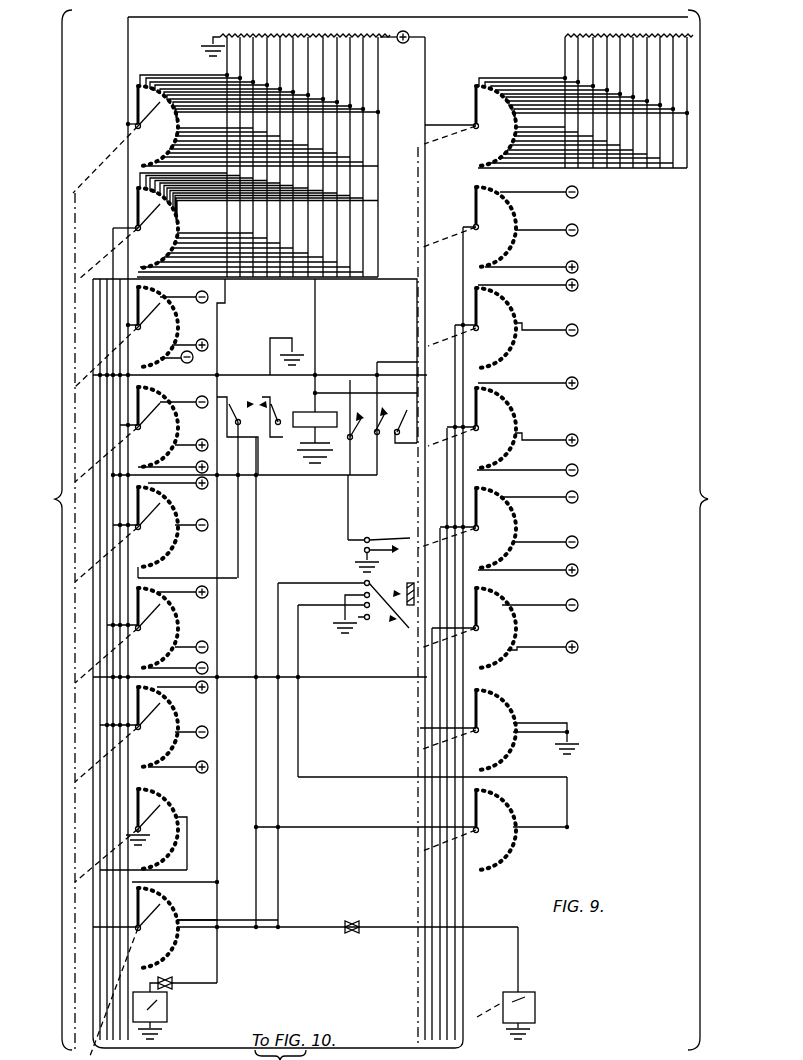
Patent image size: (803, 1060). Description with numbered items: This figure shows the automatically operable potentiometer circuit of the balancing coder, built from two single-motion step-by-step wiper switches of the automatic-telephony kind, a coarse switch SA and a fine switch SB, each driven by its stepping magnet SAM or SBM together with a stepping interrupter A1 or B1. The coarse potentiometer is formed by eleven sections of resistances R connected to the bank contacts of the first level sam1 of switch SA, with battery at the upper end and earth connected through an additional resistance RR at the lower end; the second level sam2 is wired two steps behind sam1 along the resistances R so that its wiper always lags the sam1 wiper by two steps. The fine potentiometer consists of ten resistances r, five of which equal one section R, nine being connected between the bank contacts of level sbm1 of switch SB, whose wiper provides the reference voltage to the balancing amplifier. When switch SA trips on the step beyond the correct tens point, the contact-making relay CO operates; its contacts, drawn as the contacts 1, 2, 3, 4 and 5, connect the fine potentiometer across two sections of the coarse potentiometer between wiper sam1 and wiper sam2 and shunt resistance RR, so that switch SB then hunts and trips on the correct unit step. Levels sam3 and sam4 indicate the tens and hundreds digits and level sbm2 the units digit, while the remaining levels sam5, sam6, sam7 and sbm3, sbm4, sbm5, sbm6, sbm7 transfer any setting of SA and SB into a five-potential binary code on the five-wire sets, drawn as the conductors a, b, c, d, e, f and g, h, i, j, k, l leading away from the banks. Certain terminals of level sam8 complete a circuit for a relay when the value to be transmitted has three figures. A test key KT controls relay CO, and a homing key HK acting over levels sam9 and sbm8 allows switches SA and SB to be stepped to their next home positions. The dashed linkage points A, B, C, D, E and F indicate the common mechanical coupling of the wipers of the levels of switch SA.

The first level wiper and bank of switch SA sam1 is at (137, 114).
The second level wiper and bank of switch SA sam2 is at (148, 206).
The third level of switch SA sam3 is at (141, 337).
The fourth level of switch SA sam4 is at (141, 434).
The fifth level of switch SA sam5 is at (141, 529).
The sixth level of switch SA sam6 is at (141, 634).
The seventh level of switch SA sam7 is at (141, 731).
The eighth level of switch SA sam8 is at (157, 815).
The ninth level of switch SA sam9 is at (154, 972).
The first level wiper and bank of switch SB sbm1 is at (477, 113).
The second level of switch SB sbm2 is at (497, 208).
The third level of switch SB sbm3 is at (497, 308).
The fourth level of switch SB sbm4 is at (497, 408).
The fifth level of switch SB sbm5 is at (497, 518).
The sixth level of switch SB sbm6 is at (497, 618).
The seventh level of switch SB sbm7 is at (490, 702).
The eighth level of switch SB sbm8 is at (485, 808).
The stepping magnet of switch SA SAM is at (167, 1012).
The stepping magnet of switch SB SBM is at (536, 1012).
The coarse step-by-step wiper switch SA is at (46, 530).
The fine step-by-step wiper switch SB is at (711, 530).
The additional resistance RR is at (262, 28).
The coarse potentiometer resistances R is at (380, 26).
The fine potentiometer resistances r is at (672, 28).
The contact-making relay CO is at (312, 424).
The test key KT is at (379, 546).
The homing key HK is at (347, 602).
The stepping interrupter of switch SB B1 is at (354, 916).
The stepping interrupter of switch SA A1 is at (170, 980).
The relay contact co1 1 is at (403, 411).
The relay contact co2 2 is at (383, 412).
The relay contact co3 3 is at (358, 415).
The relay contact co4 4 is at (271, 410).
The relay contact co5 5 is at (237, 430).
The wiper linkage point A is at (92, 258).
The wiper linkage point B is at (100, 298).
The wiper linkage point C is at (100, 322).
The wiper linkage point D is at (100, 351).
The wiper linkage point E is at (100, 367).
The wiper linkage point F is at (90, 392).
The conductor a is at (93, 973).
The conductor b is at (100, 990).
The conductor c is at (107, 1003).
The conductor d is at (113, 1017).
The conductor e is at (120, 1030).
The conductor f is at (128, 1042).
The conductor g is at (425, 993).
The conductor h is at (432, 1010).
The conductor i is at (440, 1028).
The conductor j is at (463, 993).
The conductor k is at (455, 1010).
The conductor l is at (447, 1028).